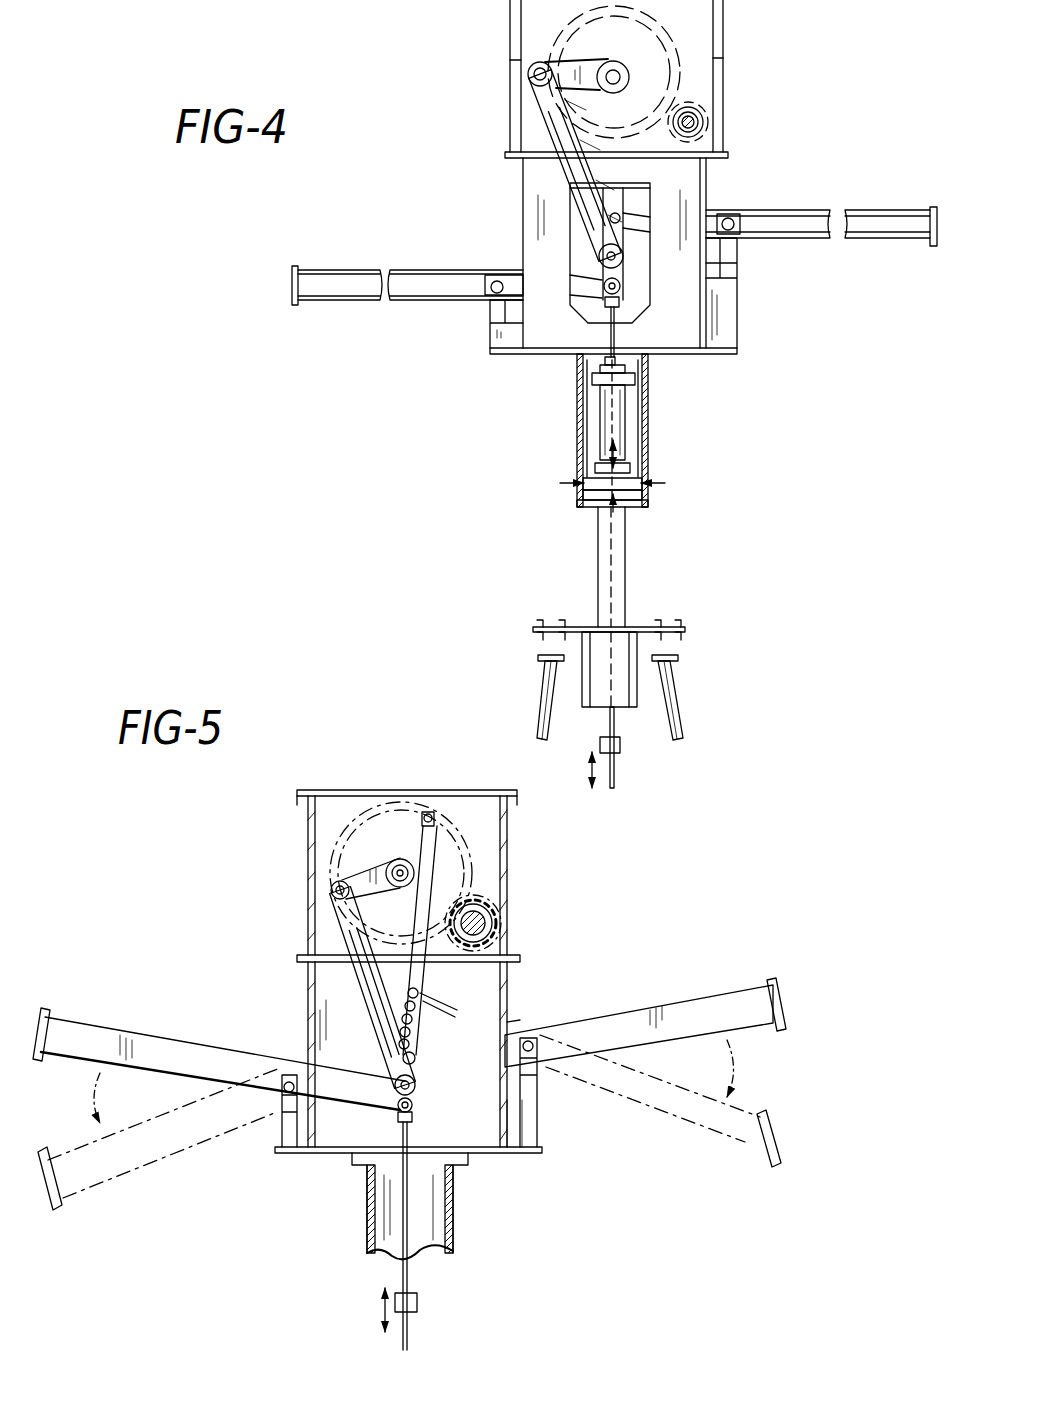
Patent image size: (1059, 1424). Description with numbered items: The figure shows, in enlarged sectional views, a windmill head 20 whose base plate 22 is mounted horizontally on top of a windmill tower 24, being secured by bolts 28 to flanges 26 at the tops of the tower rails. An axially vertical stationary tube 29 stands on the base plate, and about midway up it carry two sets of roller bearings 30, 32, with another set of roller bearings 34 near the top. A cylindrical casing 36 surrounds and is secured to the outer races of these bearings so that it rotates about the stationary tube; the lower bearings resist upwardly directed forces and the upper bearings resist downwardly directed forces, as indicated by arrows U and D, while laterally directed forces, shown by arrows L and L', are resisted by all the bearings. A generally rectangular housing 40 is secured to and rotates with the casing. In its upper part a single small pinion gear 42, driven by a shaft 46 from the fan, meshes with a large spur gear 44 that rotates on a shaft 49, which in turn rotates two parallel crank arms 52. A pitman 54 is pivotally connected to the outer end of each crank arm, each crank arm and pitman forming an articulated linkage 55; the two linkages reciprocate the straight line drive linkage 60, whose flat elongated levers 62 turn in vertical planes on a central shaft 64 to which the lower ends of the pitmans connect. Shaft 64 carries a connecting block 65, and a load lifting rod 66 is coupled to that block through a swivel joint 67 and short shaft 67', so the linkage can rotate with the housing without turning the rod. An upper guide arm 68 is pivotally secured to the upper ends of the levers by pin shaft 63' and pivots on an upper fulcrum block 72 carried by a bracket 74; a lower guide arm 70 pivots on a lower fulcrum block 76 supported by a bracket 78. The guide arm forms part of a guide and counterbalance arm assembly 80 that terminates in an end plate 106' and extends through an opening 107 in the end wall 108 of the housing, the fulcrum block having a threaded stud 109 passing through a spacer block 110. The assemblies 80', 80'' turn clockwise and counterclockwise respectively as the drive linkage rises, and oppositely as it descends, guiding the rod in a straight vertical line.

In FIG. 4, the windmill head 20 is at (497, 150).
In FIG. 5, the windmill head 20 is at (608, 937).
In FIG. 4, the base plate 22 is at (640, 630).
In FIG. 4, the windmill tower 24 is at (678, 672).
In FIG. 4, the flanges 26 is at (545, 665).
In FIG. 4, the bolts 28 is at (535, 627).
In FIG. 4, the stationary tube 29 is at (598, 565).
In FIG. 4, the roller bearings 30 is at (590, 505).
In FIG. 4, the roller bearings 32 is at (640, 495).
In FIG. 4, the roller bearings 34 is at (592, 386).
In FIG. 4, the cylindrical casing 36 is at (650, 420).
In FIG. 5, the cylindrical casing 36 is at (368, 1218).
In FIG. 4, the housing 40 is at (522, 200).
In FIG. 5, the housing 40 is at (308, 922).
In FIG. 5, the pinion gear 42 is at (478, 918).
In FIG. 5, the spur gear 44 is at (482, 900).
In FIG. 4, the shaft 46 is at (703, 122).
In FIG. 5, the shaft 46 is at (492, 930).
In FIG. 4, the shaft 49 is at (622, 76).
In FIG. 5, the shaft 49 is at (399, 866).
In FIG. 4, the crank arms 52 is at (567, 67).
In FIG. 5, the crank arms 52 is at (362, 878).
In FIG. 4, the pitman 54 is at (567, 182).
In FIG. 4, the articulated linkage 55 is at (536, 113).
In FIG. 4, the straight line drive linkage 60 is at (638, 274).
In FIG. 4, the levers 62 is at (660, 308).
In FIG. 4, the pin shaft 63' is at (620, 161).
In FIG. 4, the shaft 64 is at (628, 242).
In FIG. 5, the shaft 64 is at (418, 1086).
In FIG. 5, the connecting block 65 is at (415, 1115).
In FIG. 4, the load lifting rod 66 is at (577, 380).
In FIG. 5, the load lifting rod 66 is at (410, 1340).
In FIG. 4, the swivel joint 67 is at (643, 762).
In FIG. 5, the swivel joint 67 is at (440, 1304).
In FIG. 4, the short shaft 67' is at (581, 726).
In FIG. 5, the short shaft 67' is at (356, 1286).
In FIG. 4, the upper guide arm 68 is at (712, 213).
In FIG. 5, the upper guide arm 68 is at (450, 1057).
In FIG. 4, the lower guide arm 70 is at (517, 280).
In FIG. 5, the lower guide arm 70 is at (353, 1097).
In FIG. 4, the upper fulcrum block 72 is at (742, 250).
In FIG. 5, the upper fulcrum block 72 is at (541, 1050).
In FIG. 4, the bracket 74 is at (722, 333).
In FIG. 5, the bracket 74 is at (525, 1150).
In FIG. 4, the lower fulcrum block 76 is at (490, 313).
In FIG. 5, the lower fulcrum block 76 is at (281, 1086).
In FIG. 4, the bracket 78 is at (490, 352).
In FIG. 4, the guide and counterbalance arm assembly 80 is at (611, 235).
In FIG. 5, the guide and counterbalance arm assembly 80 is at (639, 1010).
In FIG. 5, the guide and counterbalance arm assembly 80' is at (660, 1051).
In FIG. 5, the guide and counterbalance arm assembly 80'' is at (219, 1097).
In FIG. 4, the end plate 106' is at (925, 190).
In FIG. 5, the end plate 106' is at (812, 981).
In FIG. 5, the opening 107 is at (505, 1025).
In FIG. 5, the end wall 108 is at (510, 990).
In FIG. 5, the threaded stud 109 is at (548, 1040).
In FIG. 5, the spacer block 110 is at (539, 1090).
In FIG. 4, the downward force arrow D is at (616, 447).
In FIG. 4, the lateral force arrow L is at (637, 488).
In FIG. 4, the lateral force arrow L' is at (688, 383).
In FIG. 4, the upward force arrow U is at (616, 522).